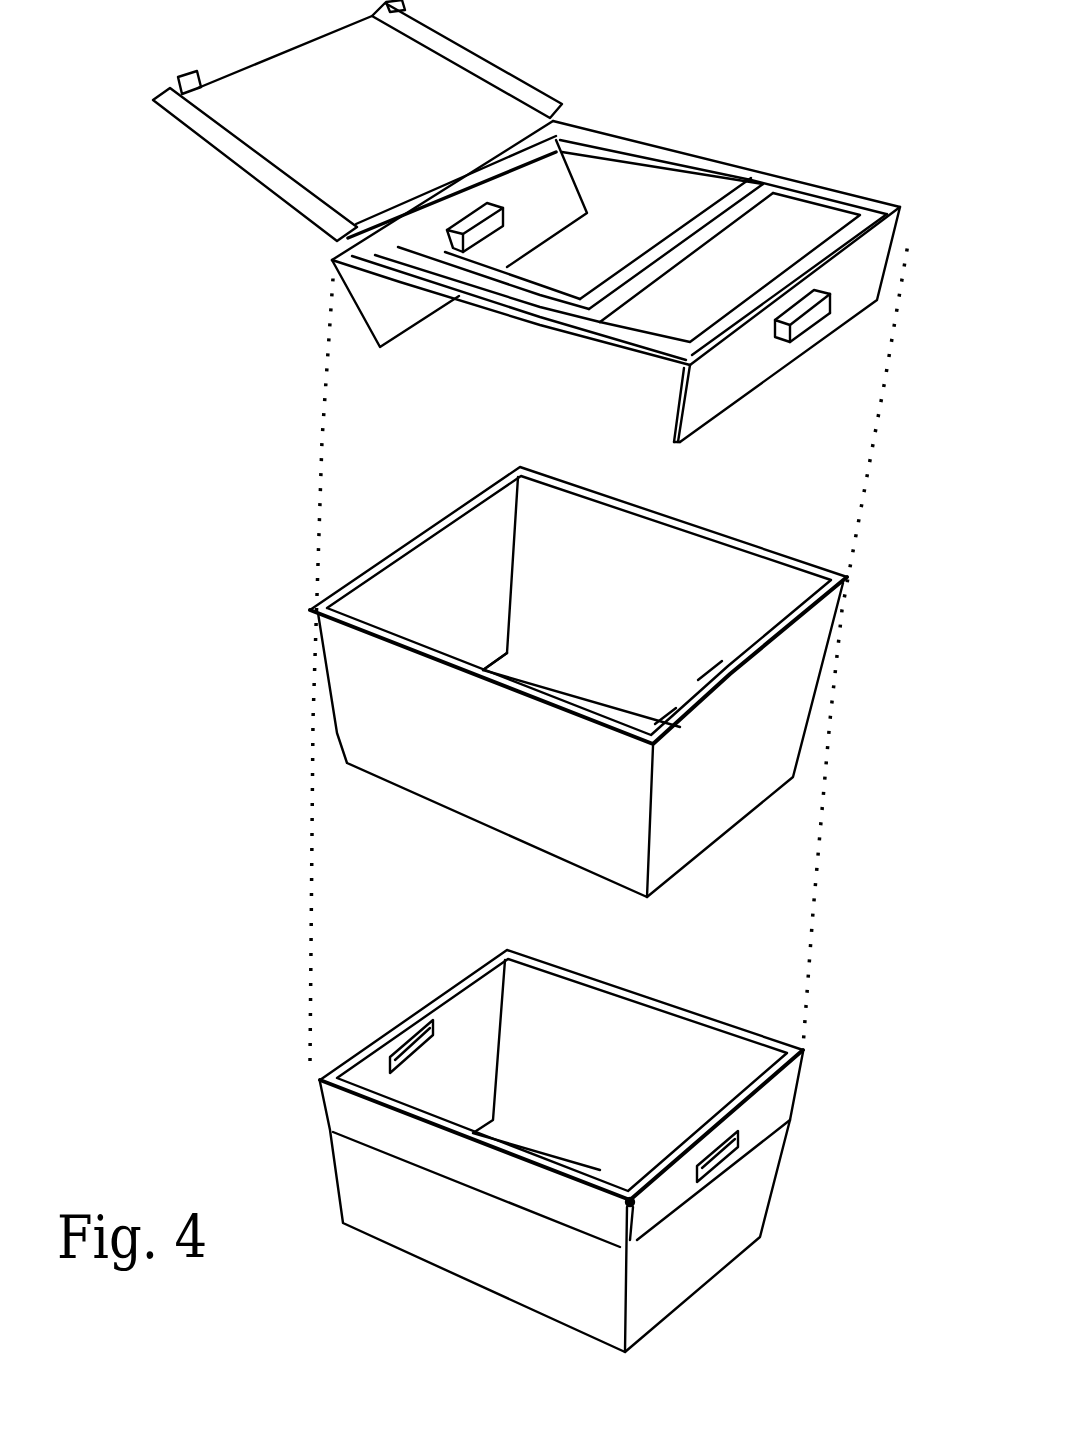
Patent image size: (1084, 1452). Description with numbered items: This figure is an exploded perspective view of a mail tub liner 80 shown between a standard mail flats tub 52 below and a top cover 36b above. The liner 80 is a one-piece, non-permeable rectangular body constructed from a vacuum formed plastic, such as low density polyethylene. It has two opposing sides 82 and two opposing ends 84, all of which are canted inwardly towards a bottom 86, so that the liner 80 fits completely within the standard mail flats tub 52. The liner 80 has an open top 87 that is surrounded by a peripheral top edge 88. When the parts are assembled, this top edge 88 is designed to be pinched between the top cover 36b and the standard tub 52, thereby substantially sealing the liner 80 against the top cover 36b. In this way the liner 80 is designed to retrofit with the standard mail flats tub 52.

The top cover 36b is at (810, 190).
The standard mail flats tub 52 is at (317, 1133).
The liner 80 is at (562, 648).
The sides 82 is at (373, 683).
The ends 84 is at (467, 540).
The bottom 86 is at (572, 690).
The open top 87 is at (630, 522).
The peripheral top edge 88 is at (800, 557).